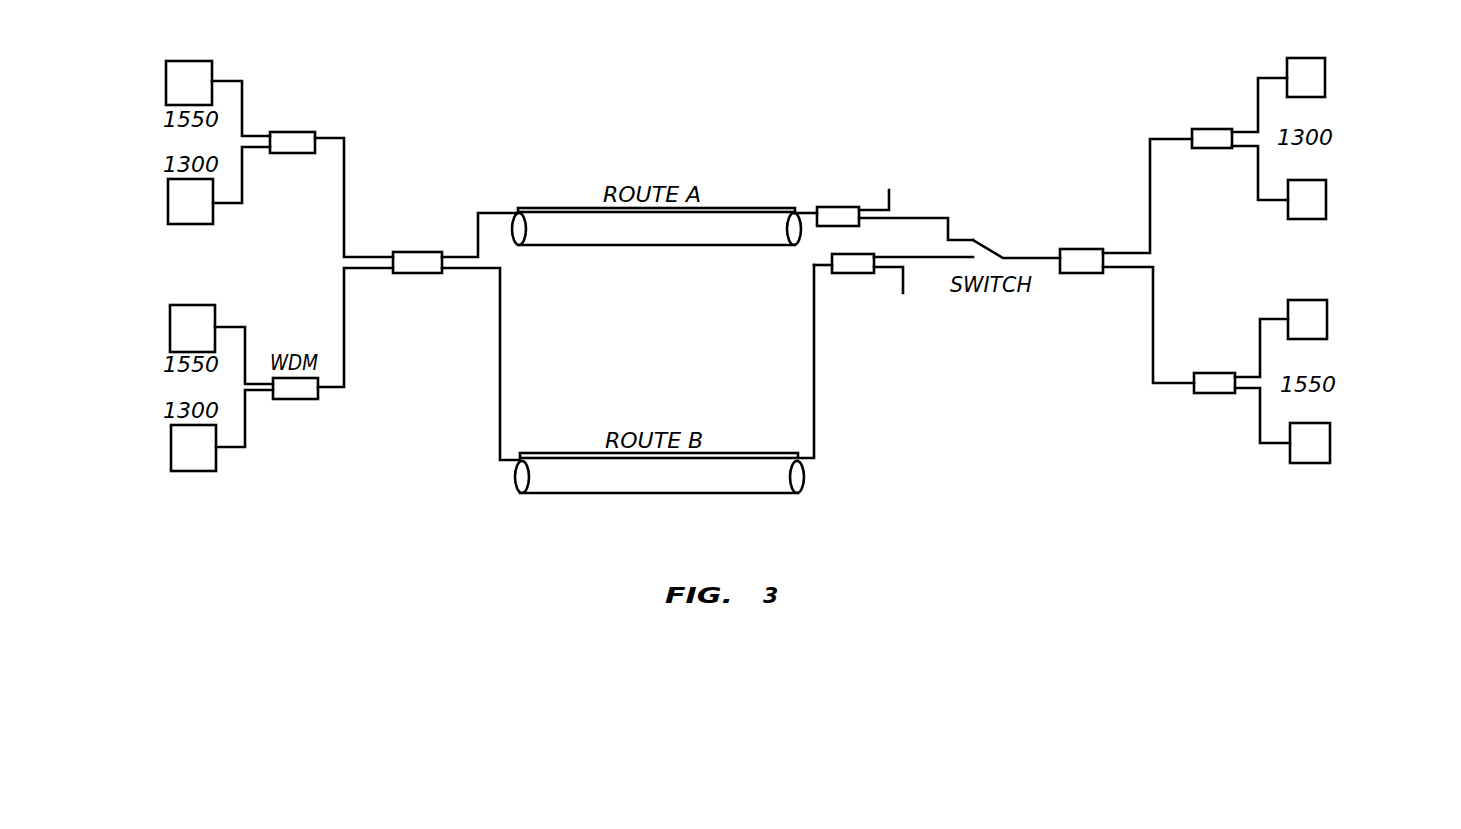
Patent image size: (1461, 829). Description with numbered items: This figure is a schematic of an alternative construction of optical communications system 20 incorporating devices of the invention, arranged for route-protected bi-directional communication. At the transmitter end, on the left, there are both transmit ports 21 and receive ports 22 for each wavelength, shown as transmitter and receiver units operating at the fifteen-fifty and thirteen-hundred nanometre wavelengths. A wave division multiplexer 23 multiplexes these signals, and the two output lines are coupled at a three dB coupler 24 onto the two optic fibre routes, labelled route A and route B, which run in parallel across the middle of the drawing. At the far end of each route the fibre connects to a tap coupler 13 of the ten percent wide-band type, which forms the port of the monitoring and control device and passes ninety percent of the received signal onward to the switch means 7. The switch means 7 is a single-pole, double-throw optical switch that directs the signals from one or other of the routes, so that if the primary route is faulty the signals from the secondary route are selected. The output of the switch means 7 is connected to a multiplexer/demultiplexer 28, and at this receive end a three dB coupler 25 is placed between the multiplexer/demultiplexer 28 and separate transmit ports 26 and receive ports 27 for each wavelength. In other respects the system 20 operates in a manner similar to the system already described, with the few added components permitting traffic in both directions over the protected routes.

The switch means 7 is at (1005, 230).
The tap coupler 13 is at (850, 207).
The communications system 20 is at (822, 90).
The transmit port 21 is at (212, 62).
The receive port 22 is at (167, 202).
The wave division multiplexer 23 is at (297, 153).
The 3 dB coupler 24 is at (417, 273).
The 3 dB coupler 25 is at (1200, 148).
The transmit port 26 is at (1325, 78).
The receive port 27 is at (1326, 198).
The multiplexer/demultiplexer 28 is at (1080, 273).